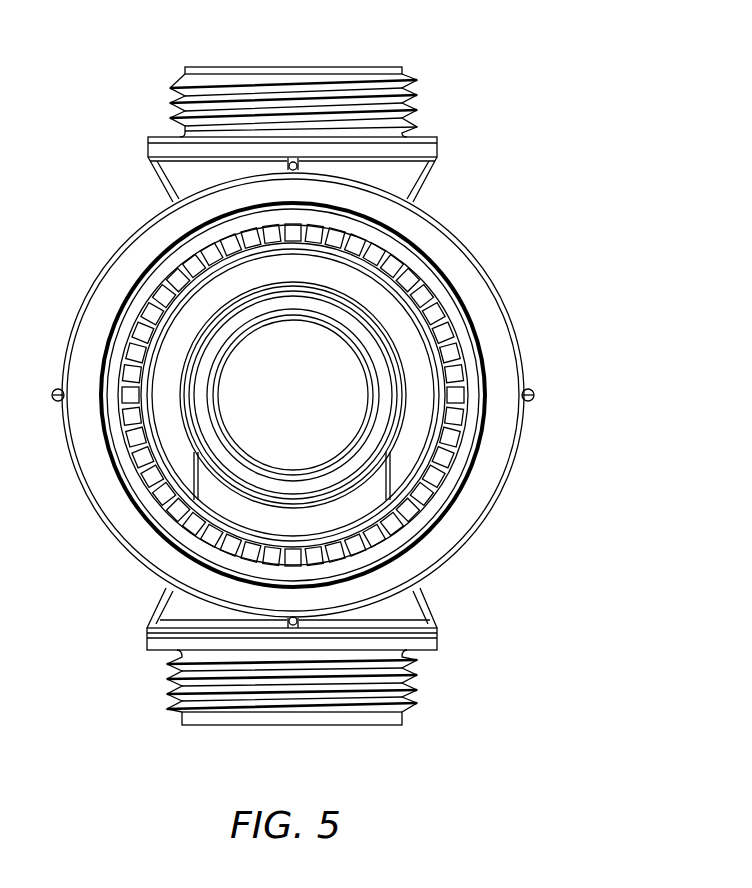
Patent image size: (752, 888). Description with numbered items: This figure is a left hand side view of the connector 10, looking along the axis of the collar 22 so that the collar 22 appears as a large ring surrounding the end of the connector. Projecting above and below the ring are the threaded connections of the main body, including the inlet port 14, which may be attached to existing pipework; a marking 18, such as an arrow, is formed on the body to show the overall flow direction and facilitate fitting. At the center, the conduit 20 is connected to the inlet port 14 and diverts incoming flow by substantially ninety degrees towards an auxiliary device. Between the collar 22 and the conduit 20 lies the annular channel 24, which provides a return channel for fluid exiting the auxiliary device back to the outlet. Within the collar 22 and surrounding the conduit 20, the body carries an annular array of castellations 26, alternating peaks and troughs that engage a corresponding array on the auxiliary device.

The connector 10 is at (510, 90).
The inlet port 14 is at (290, 727).
The marking 18 is at (292, 66).
The conduit 20 is at (203, 395).
The collar 22 is at (453, 234).
The annular channel 24 is at (153, 323).
The castellations 26 is at (140, 457).